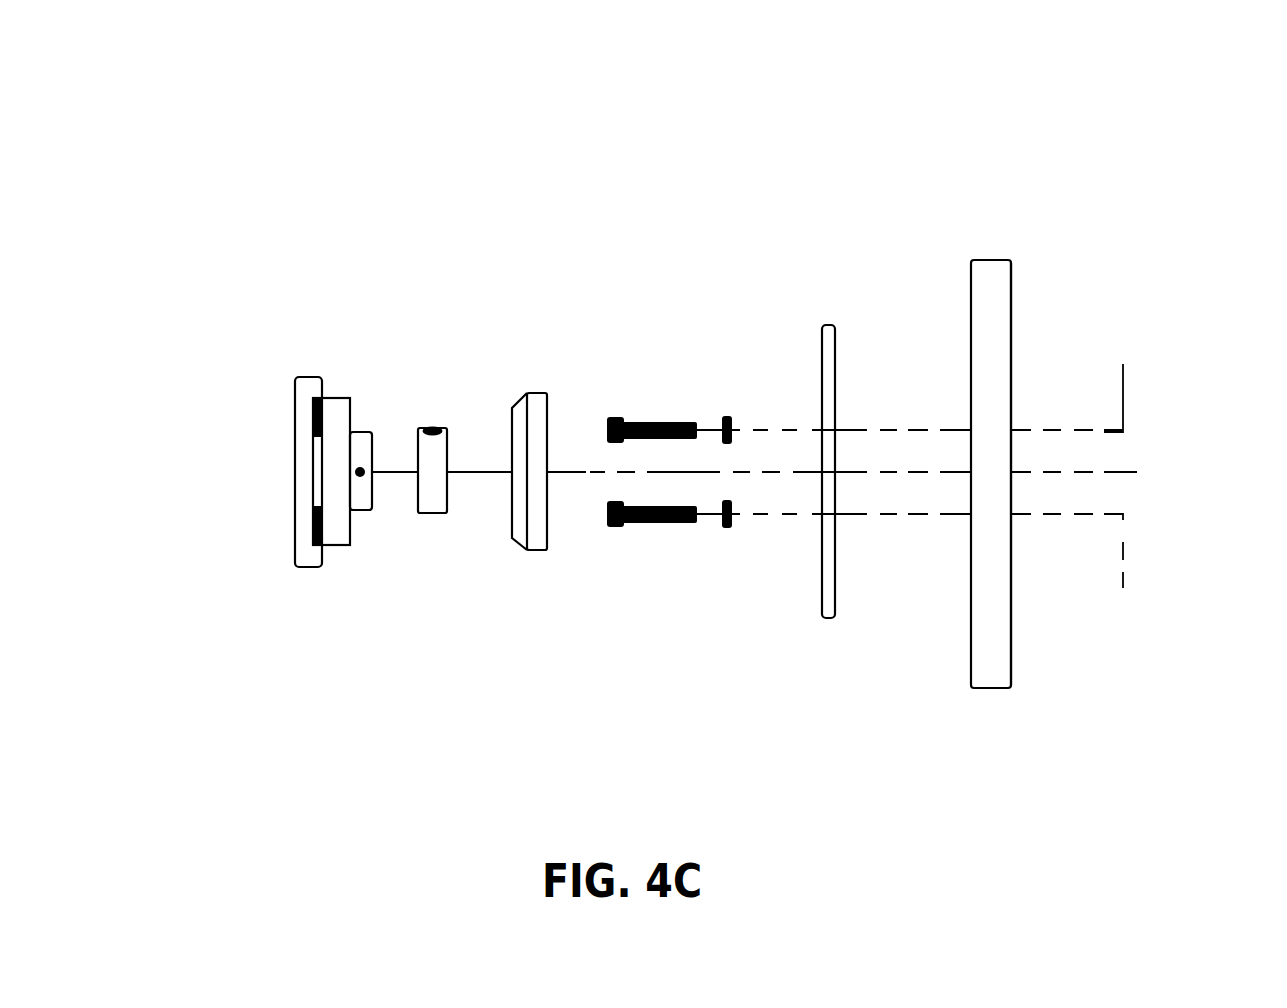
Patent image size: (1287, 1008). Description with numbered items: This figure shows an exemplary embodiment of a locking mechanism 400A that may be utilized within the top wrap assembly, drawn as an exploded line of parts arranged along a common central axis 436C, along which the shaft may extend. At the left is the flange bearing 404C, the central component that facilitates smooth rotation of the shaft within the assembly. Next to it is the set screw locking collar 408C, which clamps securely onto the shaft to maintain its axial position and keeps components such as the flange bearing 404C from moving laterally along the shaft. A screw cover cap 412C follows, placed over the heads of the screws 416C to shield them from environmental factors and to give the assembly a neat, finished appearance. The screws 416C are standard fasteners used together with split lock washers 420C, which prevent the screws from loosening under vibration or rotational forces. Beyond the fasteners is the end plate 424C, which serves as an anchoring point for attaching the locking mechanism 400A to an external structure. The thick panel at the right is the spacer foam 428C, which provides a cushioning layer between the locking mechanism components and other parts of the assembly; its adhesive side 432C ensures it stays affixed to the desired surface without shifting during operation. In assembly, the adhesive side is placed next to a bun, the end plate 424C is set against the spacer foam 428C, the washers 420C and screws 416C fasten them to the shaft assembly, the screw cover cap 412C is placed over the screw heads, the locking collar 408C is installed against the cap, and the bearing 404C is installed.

The locking mechanism 400A is at (300, 78).
The flange bearing 404C is at (359, 557).
The set screw locking collar 408C is at (456, 525).
The screw cover cap 412C is at (517, 375).
The screws 416C is at (655, 409).
The split lock washers 420C is at (718, 399).
The end plate 424C is at (818, 336).
The spacer foam 428C is at (960, 292).
The adhesive side of the spacer foam 432C is at (1022, 272).
The central axis 436C is at (1137, 474).